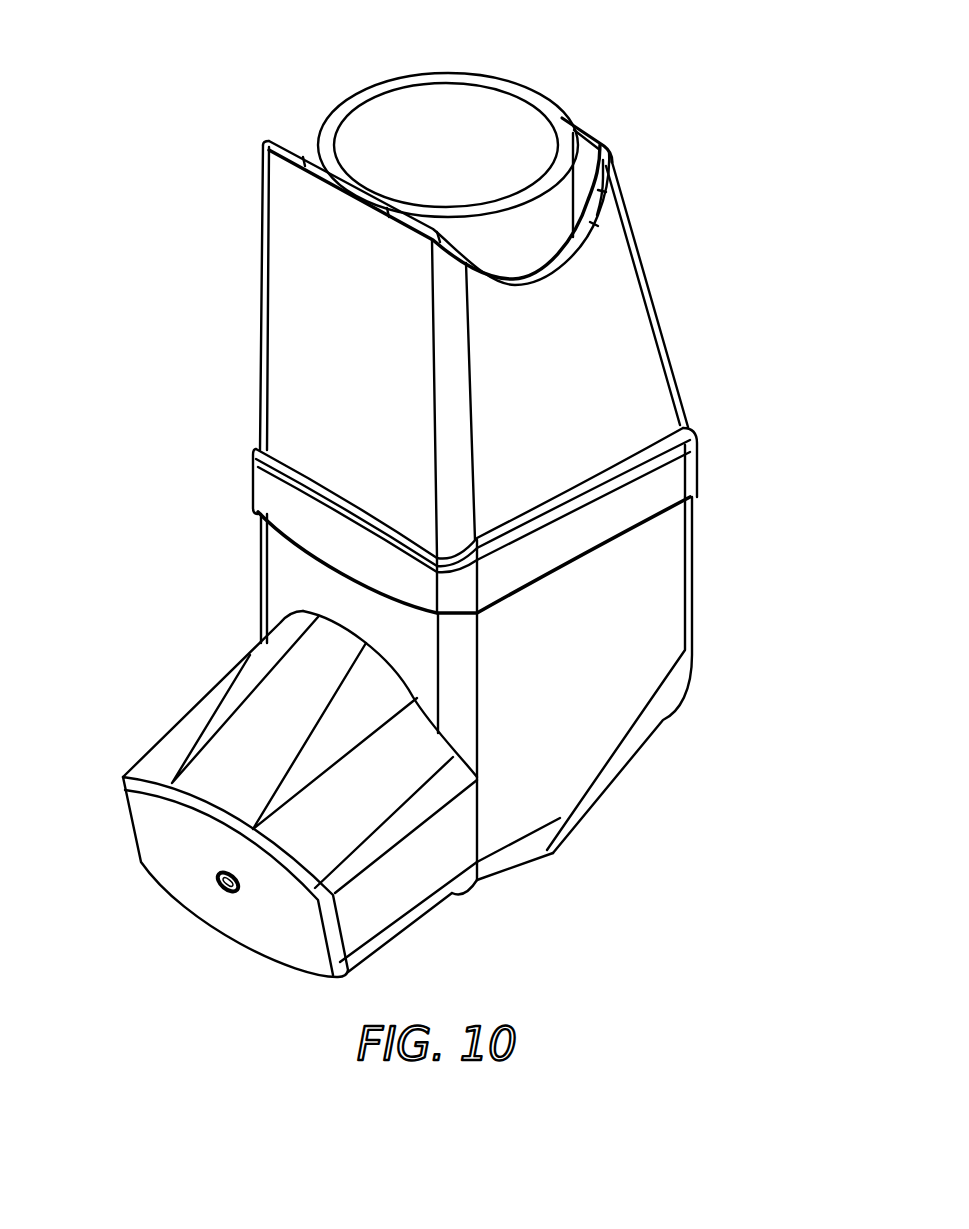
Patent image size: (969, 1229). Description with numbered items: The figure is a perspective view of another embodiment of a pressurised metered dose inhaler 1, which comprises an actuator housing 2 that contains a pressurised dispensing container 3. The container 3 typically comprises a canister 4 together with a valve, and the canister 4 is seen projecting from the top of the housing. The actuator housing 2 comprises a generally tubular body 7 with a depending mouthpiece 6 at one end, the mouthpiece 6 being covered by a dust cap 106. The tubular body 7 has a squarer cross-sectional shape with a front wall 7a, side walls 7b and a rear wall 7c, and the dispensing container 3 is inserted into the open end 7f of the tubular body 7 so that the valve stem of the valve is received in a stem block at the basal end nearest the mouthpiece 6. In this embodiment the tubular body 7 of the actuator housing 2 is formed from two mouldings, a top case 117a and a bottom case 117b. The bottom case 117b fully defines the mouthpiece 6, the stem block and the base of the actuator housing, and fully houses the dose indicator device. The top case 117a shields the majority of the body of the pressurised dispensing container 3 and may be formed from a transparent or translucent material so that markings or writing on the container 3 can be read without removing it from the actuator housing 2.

The pressurised metered dose inhaler 1 is at (719, 443).
The actuator housing 2 is at (221, 351).
The pressurised dispensing container 3 is at (533, 73).
The canister 4 is at (386, 106).
The mouthpiece 6 is at (427, 938).
The tubular body 7 is at (279, 414).
The front wall 7a is at (281, 255).
The side walls 7b is at (630, 311).
The rear wall 7c is at (578, 150).
The open end 7f is at (557, 238).
The dust cap 106 is at (147, 838).
The top case 117a is at (636, 203).
The bottom case 117b is at (704, 567).